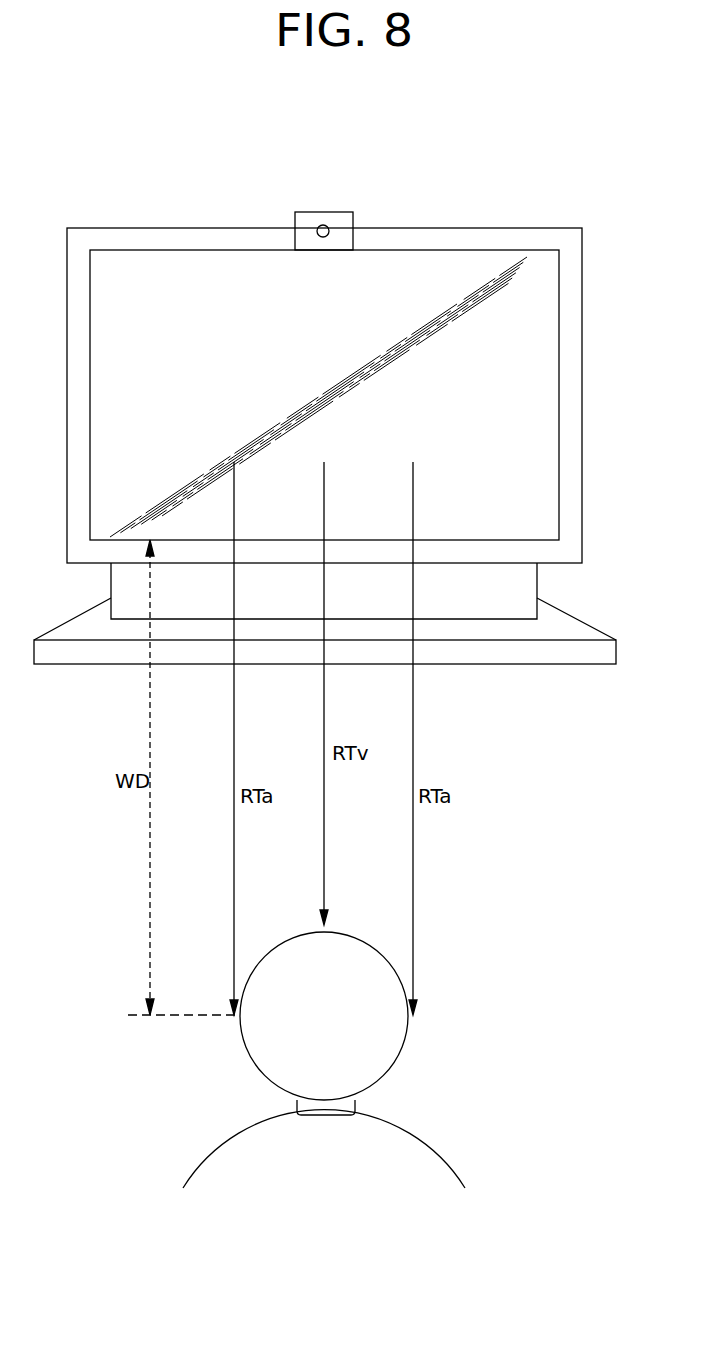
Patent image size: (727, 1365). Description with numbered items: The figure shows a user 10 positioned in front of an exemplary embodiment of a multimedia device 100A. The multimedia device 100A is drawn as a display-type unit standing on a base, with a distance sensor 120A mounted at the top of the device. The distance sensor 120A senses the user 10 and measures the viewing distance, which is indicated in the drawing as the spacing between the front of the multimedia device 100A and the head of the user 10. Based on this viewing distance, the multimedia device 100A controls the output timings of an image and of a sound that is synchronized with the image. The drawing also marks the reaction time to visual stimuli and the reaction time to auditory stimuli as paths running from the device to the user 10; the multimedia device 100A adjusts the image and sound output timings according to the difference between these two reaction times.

The multimedia device 100A is at (497, 212).
The distance sensor 120A is at (323, 211).
The user 10 is at (390, 1025).